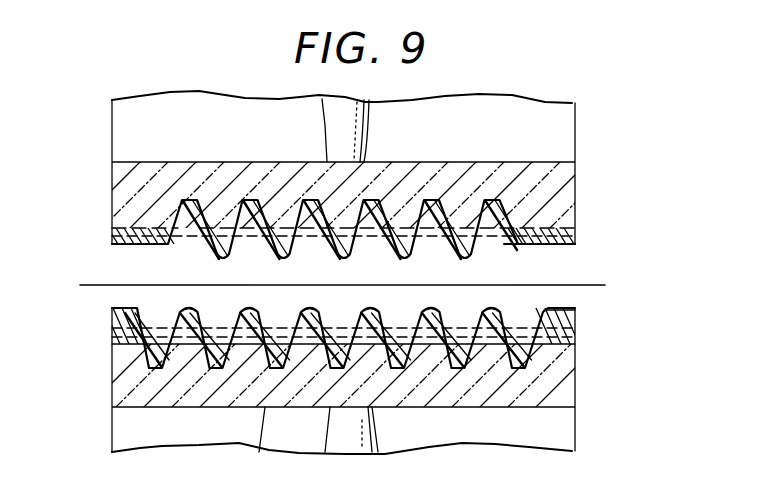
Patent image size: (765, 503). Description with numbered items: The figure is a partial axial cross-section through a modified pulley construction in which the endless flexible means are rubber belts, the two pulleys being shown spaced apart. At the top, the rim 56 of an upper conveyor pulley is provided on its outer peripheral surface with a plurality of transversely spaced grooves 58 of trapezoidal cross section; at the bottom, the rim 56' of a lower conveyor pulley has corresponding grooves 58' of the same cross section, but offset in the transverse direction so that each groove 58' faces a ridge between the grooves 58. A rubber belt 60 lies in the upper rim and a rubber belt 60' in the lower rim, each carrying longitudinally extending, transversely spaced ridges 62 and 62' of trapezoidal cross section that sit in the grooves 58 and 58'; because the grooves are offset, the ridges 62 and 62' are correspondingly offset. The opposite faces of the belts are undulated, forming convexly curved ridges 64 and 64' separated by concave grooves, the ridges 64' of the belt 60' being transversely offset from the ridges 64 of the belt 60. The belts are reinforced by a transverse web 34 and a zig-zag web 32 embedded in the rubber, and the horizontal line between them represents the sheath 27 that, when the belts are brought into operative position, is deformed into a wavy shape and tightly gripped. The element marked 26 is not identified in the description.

The rim 56 is at (343, 167).
The rim 56' is at (343, 392).
The zig-zag web 32 is at (340, 207).
The convexly curved ridge 64 is at (343, 241).
The groove 58 is at (352, 213).
The ridge 62 is at (341, 205).
The rubber belt 60 is at (539, 258).
The transverse web 34 is at (578, 233).
The sheath 27 is at (100, 285).
The lower thread 26 is at (392, 378).
The groove 58' is at (324, 357).
The convexly curved ridge 64' is at (333, 321).
The ridge 62' is at (365, 326).
The rubber belt 60' is at (550, 296).